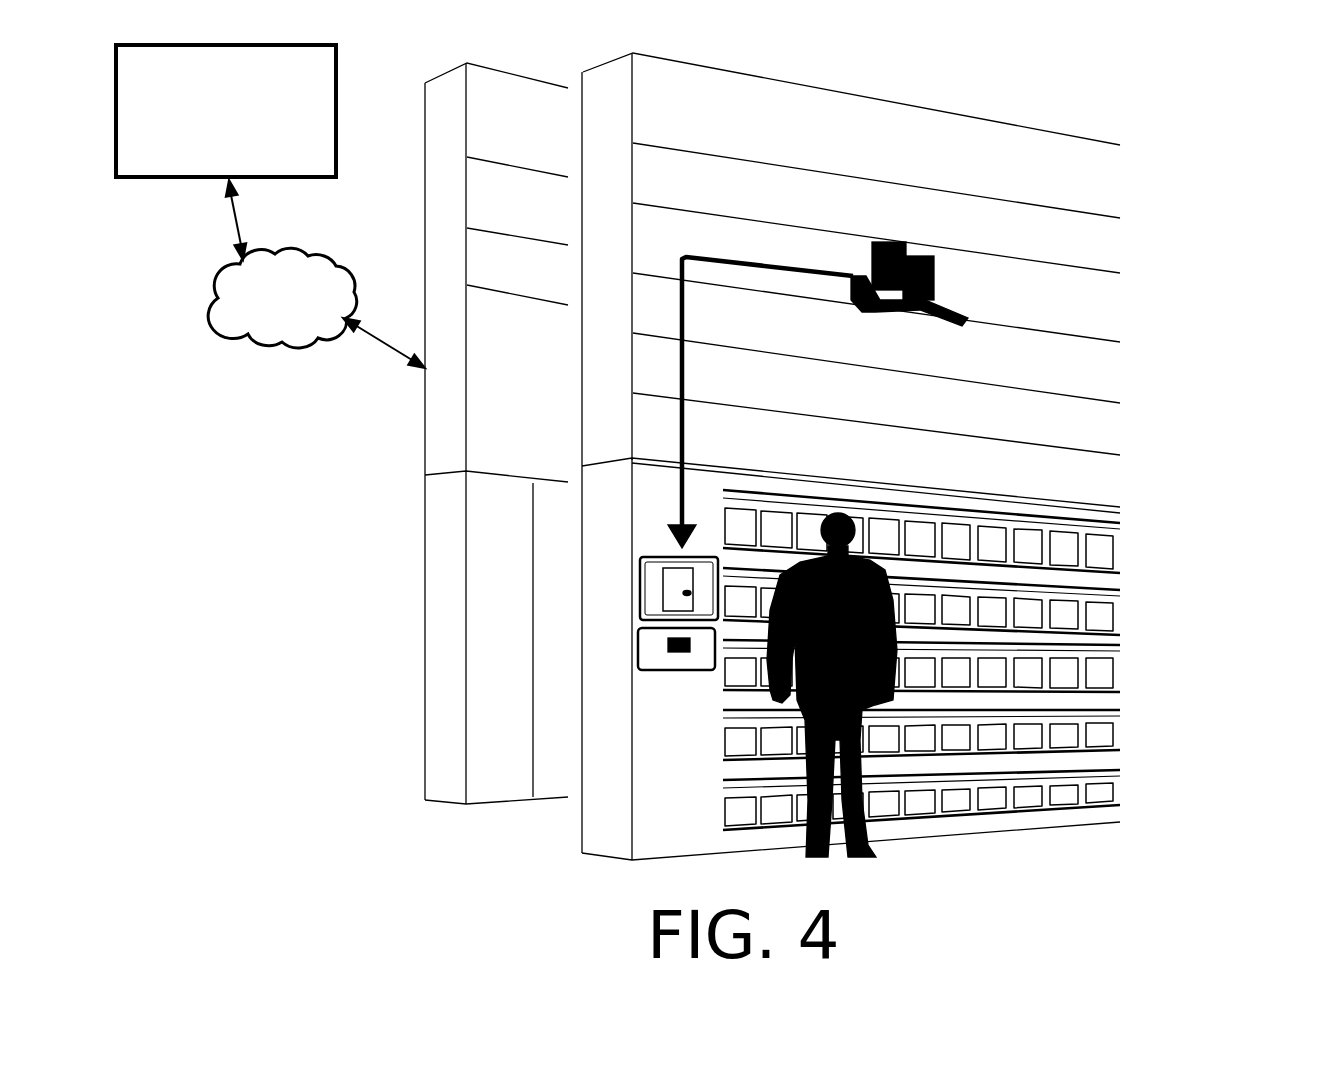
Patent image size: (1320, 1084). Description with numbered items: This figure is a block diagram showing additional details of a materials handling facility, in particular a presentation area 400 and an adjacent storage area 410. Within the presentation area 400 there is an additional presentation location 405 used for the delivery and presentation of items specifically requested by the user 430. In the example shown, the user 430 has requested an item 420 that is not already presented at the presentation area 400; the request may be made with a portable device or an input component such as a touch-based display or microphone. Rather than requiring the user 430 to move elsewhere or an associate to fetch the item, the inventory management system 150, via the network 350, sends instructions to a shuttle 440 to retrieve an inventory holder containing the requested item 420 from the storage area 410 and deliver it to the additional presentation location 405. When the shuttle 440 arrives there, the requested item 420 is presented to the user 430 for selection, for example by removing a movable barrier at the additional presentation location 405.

The inventory management system 150 is at (290, 152).
The network 350 is at (303, 320).
The presentation area 400 is at (1167, 549).
The additional presentation location 405 is at (650, 604).
The storage area 410 is at (1150, 289).
The requested item 420 is at (893, 258).
The user 430 is at (865, 857).
The shuttle 440 is at (945, 320).